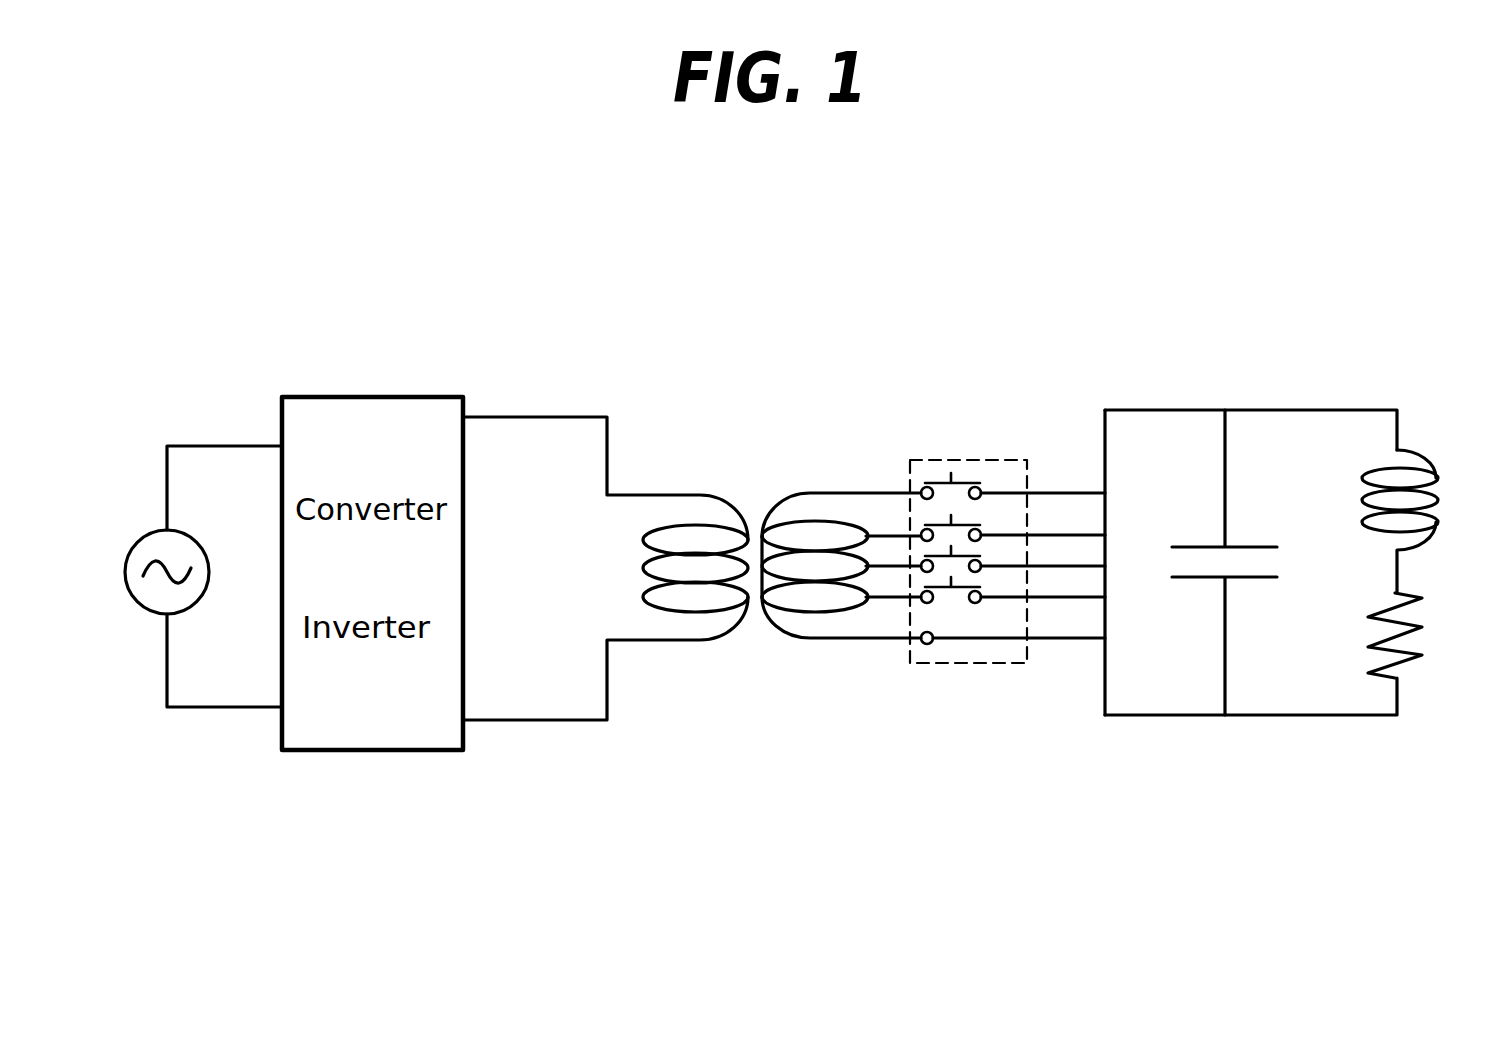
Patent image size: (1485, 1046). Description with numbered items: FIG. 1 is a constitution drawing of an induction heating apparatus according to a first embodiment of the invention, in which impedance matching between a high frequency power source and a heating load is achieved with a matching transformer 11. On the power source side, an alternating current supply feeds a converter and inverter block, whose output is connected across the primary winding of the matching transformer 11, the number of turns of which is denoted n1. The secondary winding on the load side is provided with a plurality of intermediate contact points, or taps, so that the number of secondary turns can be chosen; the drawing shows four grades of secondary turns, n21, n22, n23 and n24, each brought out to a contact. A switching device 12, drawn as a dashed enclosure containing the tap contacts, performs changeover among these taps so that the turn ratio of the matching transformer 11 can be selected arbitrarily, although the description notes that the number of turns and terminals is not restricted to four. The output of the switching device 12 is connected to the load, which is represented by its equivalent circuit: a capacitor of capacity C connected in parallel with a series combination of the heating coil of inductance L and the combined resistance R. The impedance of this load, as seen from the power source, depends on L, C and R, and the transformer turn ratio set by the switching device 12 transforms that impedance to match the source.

The matching transformer 11 is at (753, 498).
The switching device 12 is at (968, 458).
The number of turns on the primary winding n1 is at (605, 568).
The first grade of secondary winding turns n21 is at (818, 920).
The second grade of secondary winding turns n22 is at (818, 880).
The third grade of secondary winding turns n23 is at (818, 840).
The fourth grade of secondary winding turns n24 is at (818, 800).
The capacity of the capacitor C is at (1221, 562).
The inductance of the coil L is at (1414, 521).
The combined resistance R is at (1419, 635).